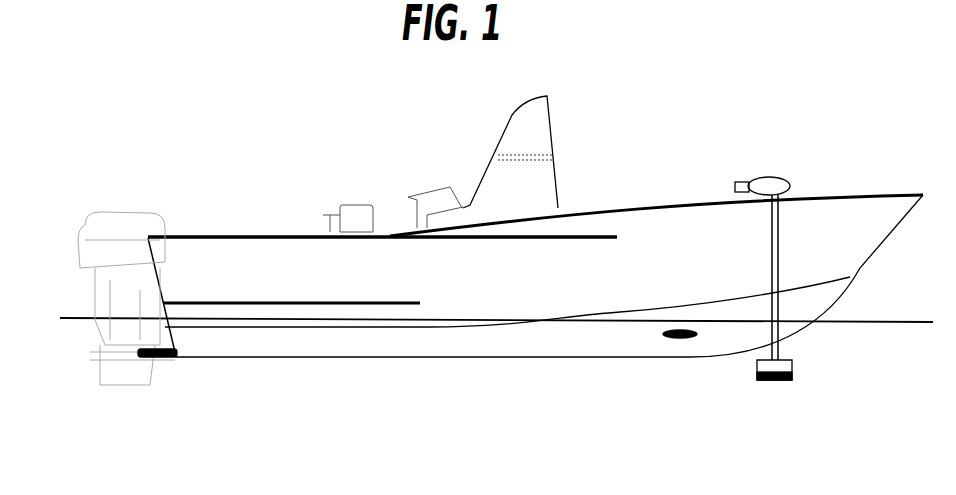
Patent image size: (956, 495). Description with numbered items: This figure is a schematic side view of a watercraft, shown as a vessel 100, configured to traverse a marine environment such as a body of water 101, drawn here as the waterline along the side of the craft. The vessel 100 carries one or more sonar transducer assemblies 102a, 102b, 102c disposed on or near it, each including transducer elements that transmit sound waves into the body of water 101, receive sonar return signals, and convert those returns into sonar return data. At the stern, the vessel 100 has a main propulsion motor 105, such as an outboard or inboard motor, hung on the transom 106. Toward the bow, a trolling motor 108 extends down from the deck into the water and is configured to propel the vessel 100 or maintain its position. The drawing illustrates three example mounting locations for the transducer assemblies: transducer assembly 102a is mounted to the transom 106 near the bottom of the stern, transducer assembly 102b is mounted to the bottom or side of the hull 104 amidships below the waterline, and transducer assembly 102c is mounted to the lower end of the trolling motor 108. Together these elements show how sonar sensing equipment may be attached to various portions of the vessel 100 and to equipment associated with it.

The vessel 100 is at (535, 166).
The body of water 101 is at (488, 434).
The sonar transducer assembly 102a is at (108, 395).
The sonar transducer assembly 102b is at (631, 375).
The sonar transducer assembly 102c is at (725, 420).
The hull 104 is at (543, 315).
The main propulsion motor 105 is at (96, 280).
The transom 106 is at (96, 292).
The trolling motor 108 is at (810, 278).